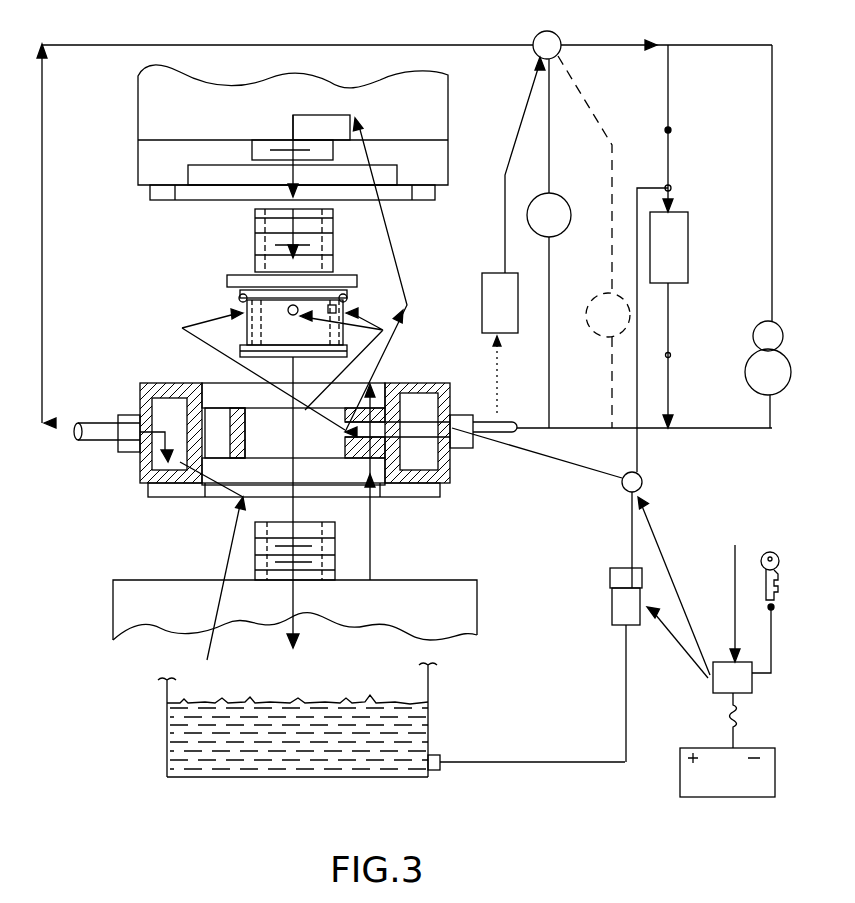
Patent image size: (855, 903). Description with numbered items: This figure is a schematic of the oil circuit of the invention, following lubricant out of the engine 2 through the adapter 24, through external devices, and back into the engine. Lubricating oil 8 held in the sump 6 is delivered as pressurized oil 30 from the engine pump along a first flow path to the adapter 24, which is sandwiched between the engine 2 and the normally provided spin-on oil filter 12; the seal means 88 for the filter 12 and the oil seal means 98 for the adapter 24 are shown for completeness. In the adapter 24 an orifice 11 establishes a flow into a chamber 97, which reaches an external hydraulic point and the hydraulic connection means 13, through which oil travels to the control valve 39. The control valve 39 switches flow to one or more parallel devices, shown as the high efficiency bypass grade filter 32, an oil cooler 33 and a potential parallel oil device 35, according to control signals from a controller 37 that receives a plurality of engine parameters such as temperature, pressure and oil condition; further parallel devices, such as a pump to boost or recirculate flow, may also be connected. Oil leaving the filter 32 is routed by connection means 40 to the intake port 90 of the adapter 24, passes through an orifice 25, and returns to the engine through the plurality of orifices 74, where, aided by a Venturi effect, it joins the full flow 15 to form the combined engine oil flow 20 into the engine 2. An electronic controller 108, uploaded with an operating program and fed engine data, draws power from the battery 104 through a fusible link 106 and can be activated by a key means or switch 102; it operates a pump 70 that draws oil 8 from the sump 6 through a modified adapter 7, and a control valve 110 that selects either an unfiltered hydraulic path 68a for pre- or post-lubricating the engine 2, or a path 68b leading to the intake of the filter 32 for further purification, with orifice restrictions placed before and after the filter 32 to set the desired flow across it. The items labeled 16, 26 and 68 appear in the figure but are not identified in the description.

The engine 2 is at (460, 581).
The sump 6 is at (430, 722).
The modified adapter 7 is at (440, 774).
The lubricating oil 8 is at (340, 698).
The orifice 11 is at (212, 466).
The spin-on oil filter 12 is at (265, 141).
The hydraulic connection means 13 is at (328, 44).
The flow 15 is at (310, 115).
The lower column 16 is at (338, 548).
The engine oil flow 20 is at (306, 642).
The adapter 24 is at (396, 384).
The orifice 25 is at (264, 435).
The upper column 26 is at (255, 222).
The pressurized oil 30 is at (210, 652).
The bypass grade filter 32 is at (690, 240).
The oil cooler 33 is at (556, 236).
The parallel oil device 35 is at (590, 340).
The controller 37 is at (465, 292).
The control valve 39 is at (560, 38).
The connection means 40 is at (640, 432).
The line 68 is at (630, 550).
The hydraulic path 68a is at (602, 470).
The hydraulic route 68b is at (645, 482).
The pump 70 is at (612, 612).
The orifices 74 is at (292, 316).
The seal means 88 is at (435, 200).
The intake port 90 is at (455, 418).
The chamber 97 is at (165, 396).
The oil seal means 98 is at (458, 512).
The key means or switch 102 is at (790, 606).
The battery 104 is at (680, 790).
The fusible link 106 is at (738, 722).
The electronic controller 108 is at (712, 692).
The control valve 110 is at (623, 492).